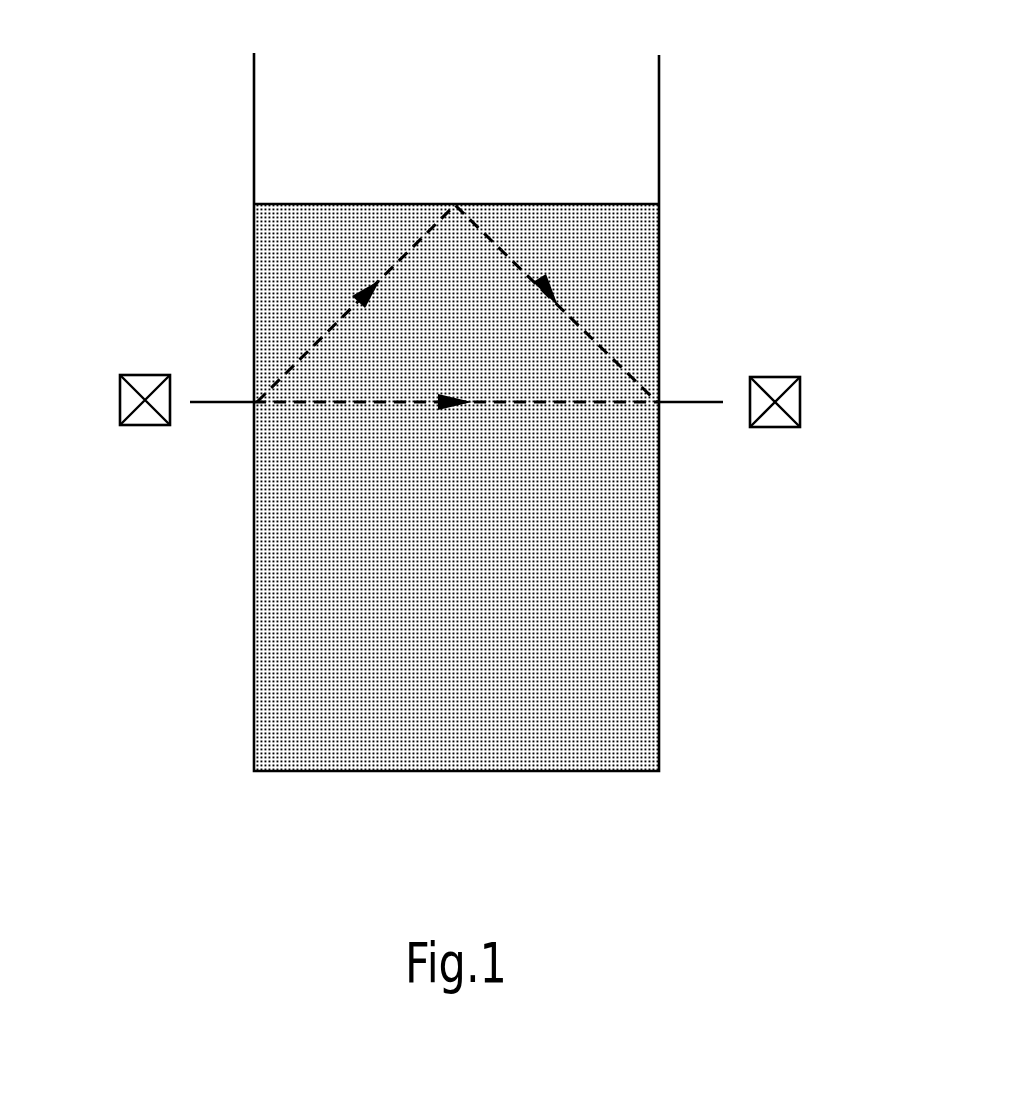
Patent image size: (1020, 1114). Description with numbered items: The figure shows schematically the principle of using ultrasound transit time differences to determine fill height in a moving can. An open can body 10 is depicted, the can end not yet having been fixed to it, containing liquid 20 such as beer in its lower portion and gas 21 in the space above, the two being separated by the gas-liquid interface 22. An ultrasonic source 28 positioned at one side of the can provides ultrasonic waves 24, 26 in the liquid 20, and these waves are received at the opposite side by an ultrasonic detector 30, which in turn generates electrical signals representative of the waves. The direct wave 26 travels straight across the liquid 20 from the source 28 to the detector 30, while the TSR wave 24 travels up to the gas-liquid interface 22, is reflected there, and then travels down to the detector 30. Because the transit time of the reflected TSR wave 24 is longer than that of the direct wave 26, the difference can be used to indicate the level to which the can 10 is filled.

The open can body 10 is at (662, 82).
The liquid 20 is at (474, 651).
The gas 21 is at (464, 153).
The gas-liquid interface 22 is at (621, 203).
The TSR wave 24 is at (365, 294).
The direct wave 26 is at (415, 403).
The ultrasonic source 28 is at (800, 412).
The ultrasonic detector 30 is at (120, 418).